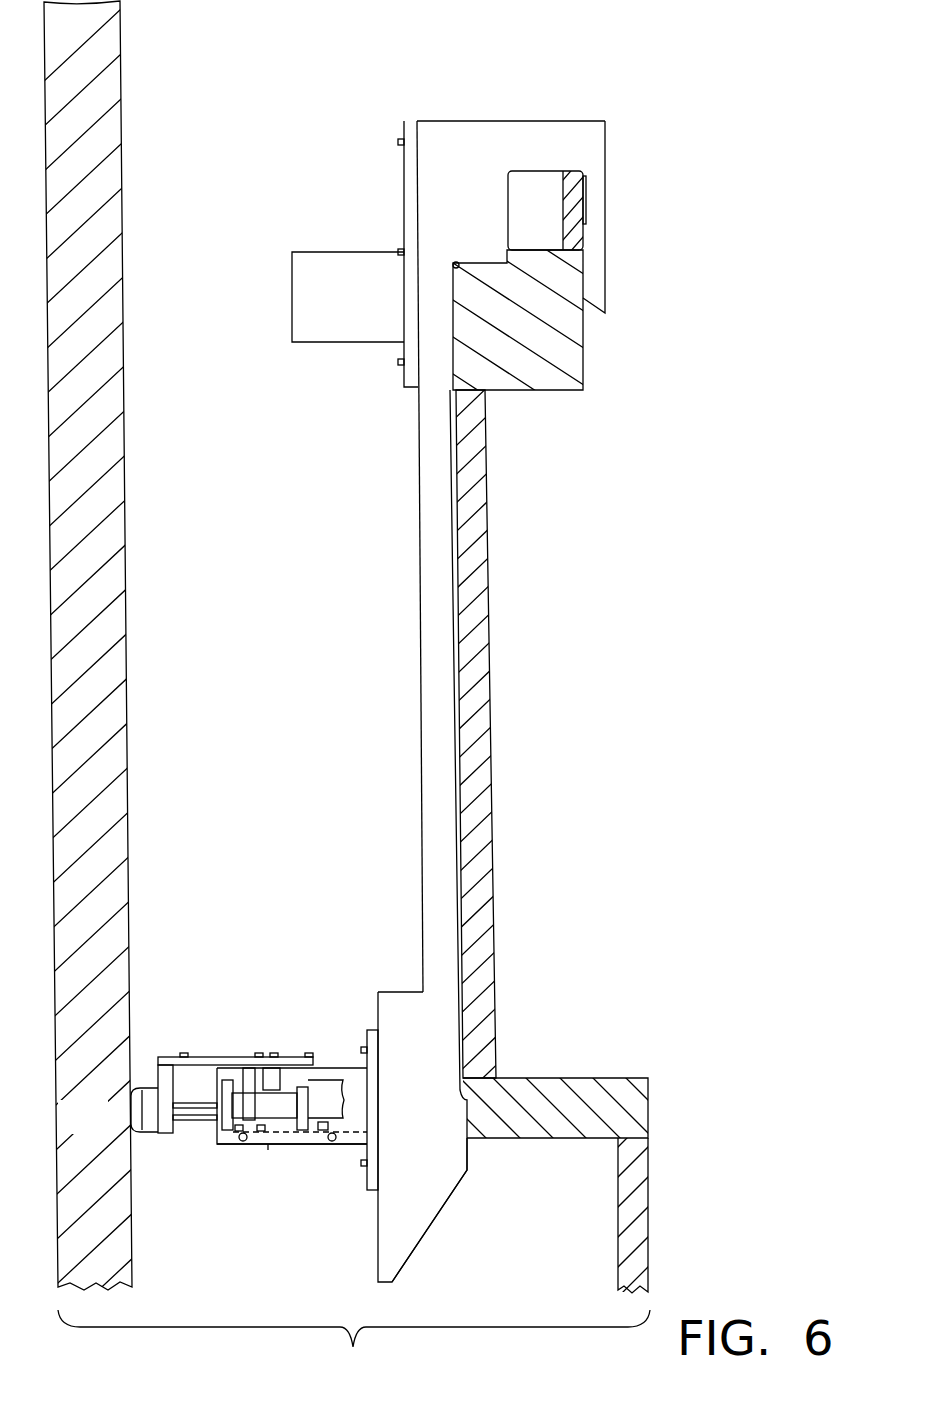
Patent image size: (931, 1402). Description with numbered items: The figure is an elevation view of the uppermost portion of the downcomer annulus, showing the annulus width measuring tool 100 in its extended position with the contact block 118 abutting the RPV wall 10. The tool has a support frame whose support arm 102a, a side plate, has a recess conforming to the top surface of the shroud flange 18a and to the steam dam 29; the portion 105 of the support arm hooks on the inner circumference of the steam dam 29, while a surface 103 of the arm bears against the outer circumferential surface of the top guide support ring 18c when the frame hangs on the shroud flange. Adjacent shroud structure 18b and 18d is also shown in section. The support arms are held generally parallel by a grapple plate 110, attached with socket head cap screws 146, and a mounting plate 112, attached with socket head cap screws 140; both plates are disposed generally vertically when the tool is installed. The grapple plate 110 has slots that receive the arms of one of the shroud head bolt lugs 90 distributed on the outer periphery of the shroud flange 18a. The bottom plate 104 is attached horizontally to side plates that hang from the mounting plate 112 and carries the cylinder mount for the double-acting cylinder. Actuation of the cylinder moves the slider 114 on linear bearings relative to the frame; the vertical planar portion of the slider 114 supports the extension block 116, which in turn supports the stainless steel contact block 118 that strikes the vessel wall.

The RPV wall 10 is at (113, 733).
The shroud flange 18a is at (585, 340).
The frame member 18b is at (496, 668).
The top guide support ring 18c is at (540, 1077).
The frame member 18d is at (618, 1212).
The steam dam 29 is at (586, 205).
The shroud head bolt lug 90 is at (316, 312).
The annulus width measuring tool 100 is at (285, 1030).
The support arm 102a is at (420, 613).
The surface 103 is at (470, 1157).
The bottom plate 104 is at (266, 1147).
The portion 105 is at (598, 253).
The grapple plate 110 is at (402, 213).
The mounting plate 112 is at (367, 1040).
The slider 114 is at (223, 1057).
The extension block 116 is at (152, 1135).
The contact block 118 is at (131, 1110).
The socket head cap screws 140 is at (367, 1165).
The socket head cap screws 146 is at (400, 363).